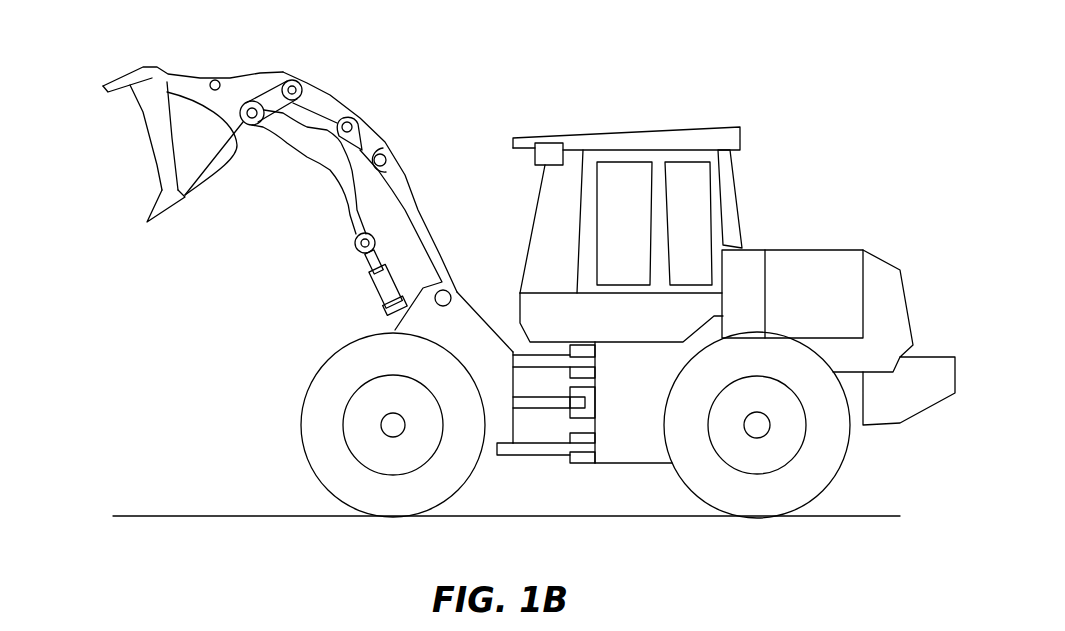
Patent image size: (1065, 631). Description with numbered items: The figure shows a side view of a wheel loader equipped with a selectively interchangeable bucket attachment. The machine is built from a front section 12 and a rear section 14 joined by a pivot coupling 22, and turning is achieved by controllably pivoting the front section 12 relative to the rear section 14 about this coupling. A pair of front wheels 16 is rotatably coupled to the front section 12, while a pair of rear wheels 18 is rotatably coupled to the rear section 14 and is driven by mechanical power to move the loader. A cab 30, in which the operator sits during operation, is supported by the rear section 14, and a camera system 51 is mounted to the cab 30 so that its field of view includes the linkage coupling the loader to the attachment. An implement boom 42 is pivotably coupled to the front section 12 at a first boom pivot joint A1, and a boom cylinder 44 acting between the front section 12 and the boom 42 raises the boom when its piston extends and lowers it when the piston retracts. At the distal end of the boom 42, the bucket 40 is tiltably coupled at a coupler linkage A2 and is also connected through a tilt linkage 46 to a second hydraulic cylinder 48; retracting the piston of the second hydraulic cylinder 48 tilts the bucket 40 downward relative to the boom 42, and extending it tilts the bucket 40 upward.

The front section 12 is at (496, 428).
The rear section 14 is at (903, 329).
The front wheels 16 is at (395, 510).
The rear wheels 18 is at (758, 512).
The pivot coupling 22 is at (527, 348).
The cab 30 is at (752, 119).
The bucket 40 is at (90, 77).
The implement boom 42 is at (340, 193).
The boom cylinder 44 is at (373, 270).
The tilt linkage 46 is at (317, 100).
The second hydraulic cylinder 48 is at (420, 210).
The camera system 51 is at (535, 150).
The first boom pivot joint A1 is at (450, 282).
The coupler linkage A2 is at (257, 128).